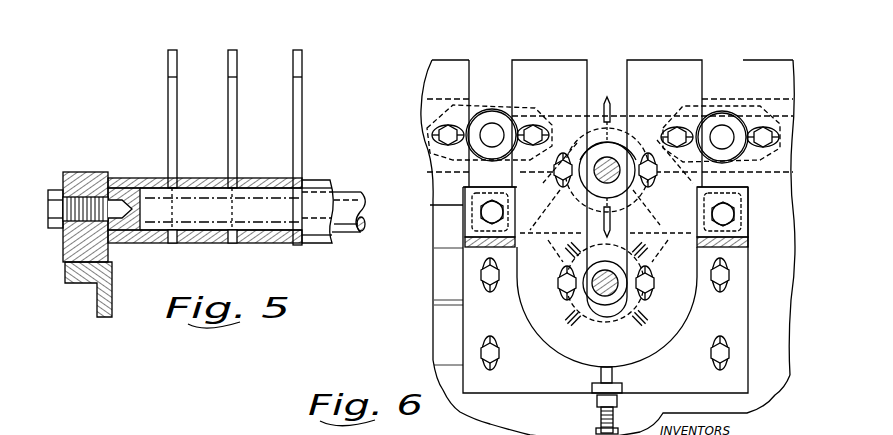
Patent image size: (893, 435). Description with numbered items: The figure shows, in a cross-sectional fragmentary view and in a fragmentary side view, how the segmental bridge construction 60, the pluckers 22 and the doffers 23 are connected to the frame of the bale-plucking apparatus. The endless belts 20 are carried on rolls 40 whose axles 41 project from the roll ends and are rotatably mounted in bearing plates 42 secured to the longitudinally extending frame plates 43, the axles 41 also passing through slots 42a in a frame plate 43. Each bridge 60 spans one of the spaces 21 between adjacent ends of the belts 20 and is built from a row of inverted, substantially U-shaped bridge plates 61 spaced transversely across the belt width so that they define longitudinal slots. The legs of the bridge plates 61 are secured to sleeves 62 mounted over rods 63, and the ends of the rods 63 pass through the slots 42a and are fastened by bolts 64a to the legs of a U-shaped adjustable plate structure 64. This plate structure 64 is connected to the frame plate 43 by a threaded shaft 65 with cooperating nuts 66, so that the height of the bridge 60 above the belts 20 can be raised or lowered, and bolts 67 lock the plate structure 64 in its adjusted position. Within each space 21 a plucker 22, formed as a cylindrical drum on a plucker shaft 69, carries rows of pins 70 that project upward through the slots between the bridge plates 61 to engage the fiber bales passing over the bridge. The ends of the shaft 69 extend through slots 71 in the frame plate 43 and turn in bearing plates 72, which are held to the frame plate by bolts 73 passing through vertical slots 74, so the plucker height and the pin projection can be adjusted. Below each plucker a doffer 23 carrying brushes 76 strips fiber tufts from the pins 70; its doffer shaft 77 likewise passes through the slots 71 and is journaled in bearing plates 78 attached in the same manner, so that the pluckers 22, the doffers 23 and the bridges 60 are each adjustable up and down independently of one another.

In FIG. 6, the endless belt 20 is at (444, 178).
In FIG. 6, the space 21 is at (654, 55).
In FIG. 6, the plucker 22 is at (570, 251).
In FIG. 6, the doffer 23 is at (650, 251).
In FIG. 6, the roll 40 is at (442, 147).
In FIG. 6, the axle 41 is at (500, 128).
In FIG. 6, the bearing plate 42 is at (495, 112).
In FIG. 6, the slot 42a is at (475, 70).
In FIG. 6, the frame plate 43 is at (440, 284).
In FIG. 5, the segmental bridge construction 60 is at (158, 178).
In FIG. 6, the segmental bridge construction 60 is at (651, 118).
In FIG. 5, the bridge plate 61 is at (229, 62).
In FIG. 6, the bridge plate 61 is at (568, 250).
In FIG. 5, the sleeve 62 is at (173, 245).
In FIG. 6, the sleeve 62 is at (480, 248).
In FIG. 5, the rod 63 is at (346, 192).
In FIG. 5, the adjustable plate structure 64 is at (96, 305).
In FIG. 6, the adjustable plate structure 64 is at (546, 394).
In FIG. 5, the bolt 64a is at (58, 232).
In FIG. 6, the bolt 64a is at (482, 222).
In FIG. 6, the threaded shaft 65 is at (618, 414).
In FIG. 6, the nut 66 is at (624, 380).
In FIG. 6, the bolt 67 is at (486, 292).
In FIG. 6, the plucker shaft 69 is at (618, 183).
In FIG. 6, the pin 70 is at (606, 102).
In FIG. 6, the slot 71 is at (588, 62).
In FIG. 6, the bearing plate 72 is at (598, 135).
In FIG. 6, the bolt 73 is at (562, 186).
In FIG. 6, the vertical slot 74 is at (574, 198).
In FIG. 6, the brush 76 is at (648, 295).
In FIG. 6, the doffer shaft 77 is at (612, 305).
In FIG. 6, the bearing plate 78 is at (596, 308).